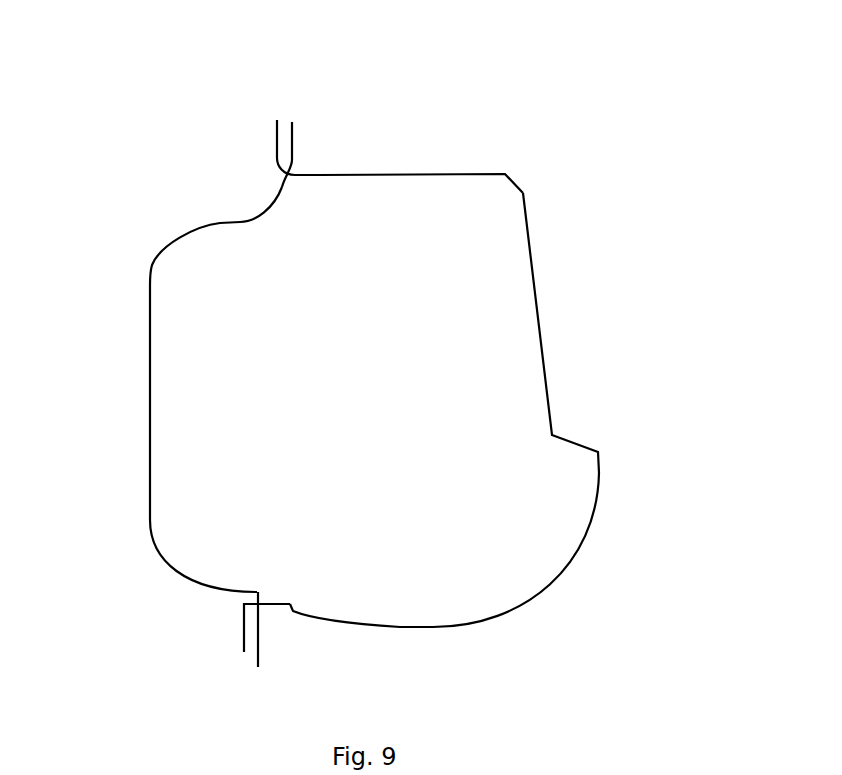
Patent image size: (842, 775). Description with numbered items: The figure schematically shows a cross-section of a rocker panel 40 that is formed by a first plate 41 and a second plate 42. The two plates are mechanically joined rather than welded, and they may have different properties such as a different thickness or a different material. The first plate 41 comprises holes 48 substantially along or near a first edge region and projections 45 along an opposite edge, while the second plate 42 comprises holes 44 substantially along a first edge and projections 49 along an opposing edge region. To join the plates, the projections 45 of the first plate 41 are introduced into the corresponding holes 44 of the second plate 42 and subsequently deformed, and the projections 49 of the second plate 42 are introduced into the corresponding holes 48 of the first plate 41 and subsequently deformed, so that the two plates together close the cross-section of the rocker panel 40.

The rocker panel 40 is at (360, 367).
The first plate 41 is at (543, 355).
The second plate 42 is at (150, 333).
The holes of the second plate 44 is at (308, 158).
The projections of the first plate 45 is at (277, 133).
The holes of the first plate 48 is at (263, 585).
The projections of the second plate 49 is at (258, 638).